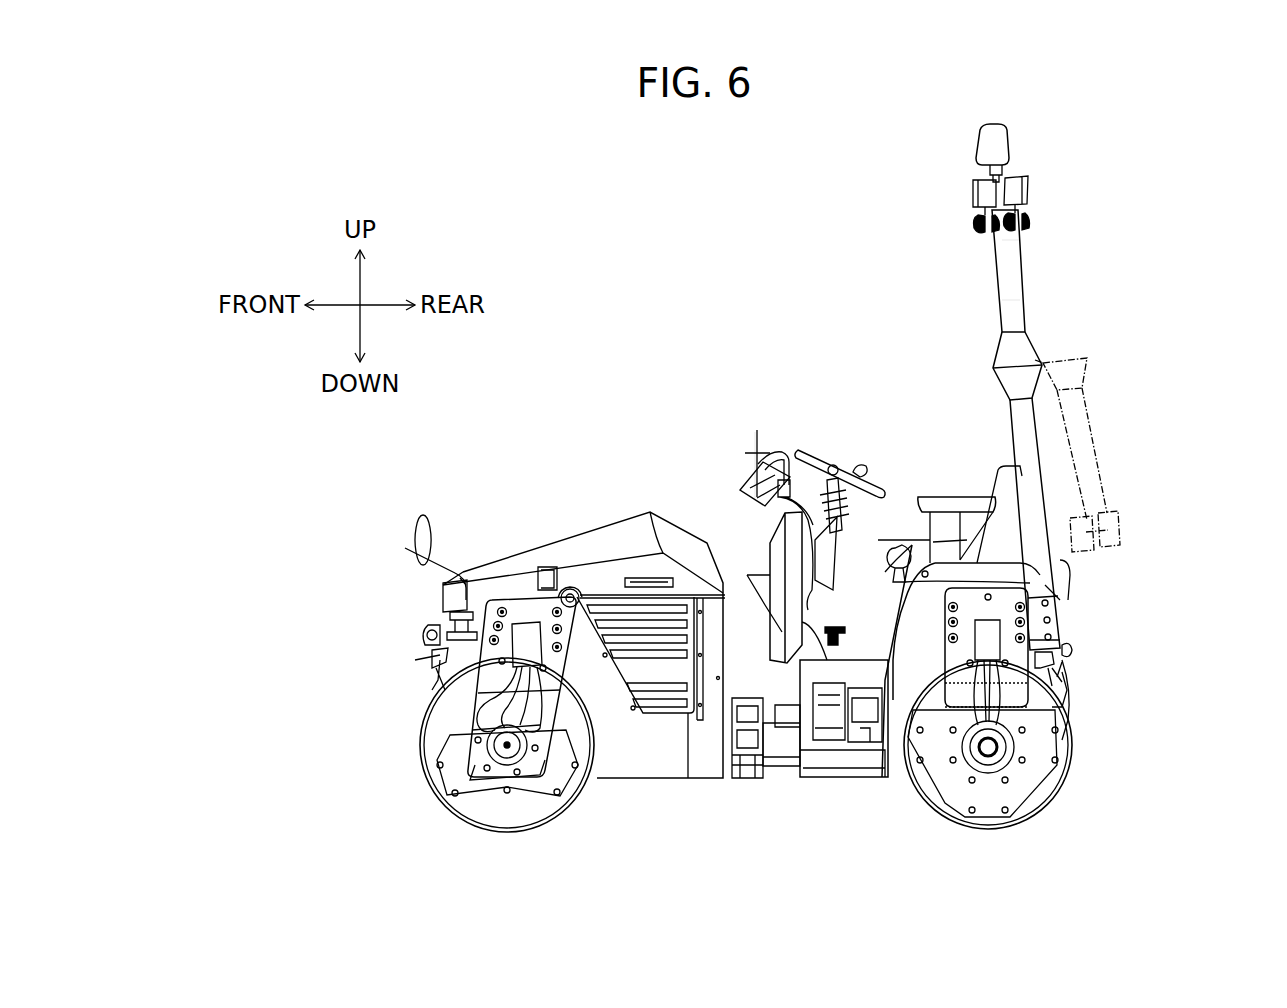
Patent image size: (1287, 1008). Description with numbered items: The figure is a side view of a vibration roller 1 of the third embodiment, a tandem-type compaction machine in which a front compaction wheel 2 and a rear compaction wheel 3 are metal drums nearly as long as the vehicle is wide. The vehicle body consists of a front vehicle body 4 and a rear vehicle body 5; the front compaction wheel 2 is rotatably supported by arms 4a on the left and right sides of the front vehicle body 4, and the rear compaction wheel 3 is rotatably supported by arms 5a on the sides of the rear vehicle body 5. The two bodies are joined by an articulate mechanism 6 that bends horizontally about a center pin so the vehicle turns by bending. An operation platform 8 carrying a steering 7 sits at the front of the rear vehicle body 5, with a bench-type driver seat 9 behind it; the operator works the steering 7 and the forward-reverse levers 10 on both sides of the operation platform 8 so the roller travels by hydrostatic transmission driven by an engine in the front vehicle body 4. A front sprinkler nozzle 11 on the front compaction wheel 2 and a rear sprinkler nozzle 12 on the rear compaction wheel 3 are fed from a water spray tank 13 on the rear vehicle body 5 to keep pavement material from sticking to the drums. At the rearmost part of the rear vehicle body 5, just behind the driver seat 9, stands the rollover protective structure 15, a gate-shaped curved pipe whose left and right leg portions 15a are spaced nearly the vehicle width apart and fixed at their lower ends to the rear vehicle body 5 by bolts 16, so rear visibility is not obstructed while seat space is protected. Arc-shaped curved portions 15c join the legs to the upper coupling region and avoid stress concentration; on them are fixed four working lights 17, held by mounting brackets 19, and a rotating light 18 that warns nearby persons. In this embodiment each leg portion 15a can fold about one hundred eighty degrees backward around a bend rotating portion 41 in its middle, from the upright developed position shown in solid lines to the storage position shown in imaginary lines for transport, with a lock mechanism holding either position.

The vibration roller 1 is at (598, 366).
The front compaction wheel 2 is at (475, 805).
The rear compaction wheel 3 is at (1042, 795).
The front vehicle body 4 is at (655, 768).
The arms 4a is at (480, 692).
The rear vehicle body 5 is at (845, 762).
The arms 5a is at (1050, 746).
The articulate mechanism 6 is at (755, 787).
The steering 7 is at (800, 455).
The operation platform 8 is at (765, 520).
The driver seat 9 is at (893, 553).
The forward-reverse levers 10 is at (830, 470).
The front sprinkler nozzle 11 is at (430, 660).
The rear sprinkler nozzle 12 is at (1054, 658).
The water spray tank 13 is at (1005, 487).
The rollover protective structure (ROPS) 15 is at (995, 288).
The leg portions 15a is at (1022, 293).
The curved portions 15c is at (1006, 240).
The bolts 16 is at (1054, 636).
The working lights 17 is at (972, 190).
The rotating light 18 is at (1003, 143).
The mounting brackets 19 is at (978, 232).
The bend rotating portion 41 is at (1052, 345).